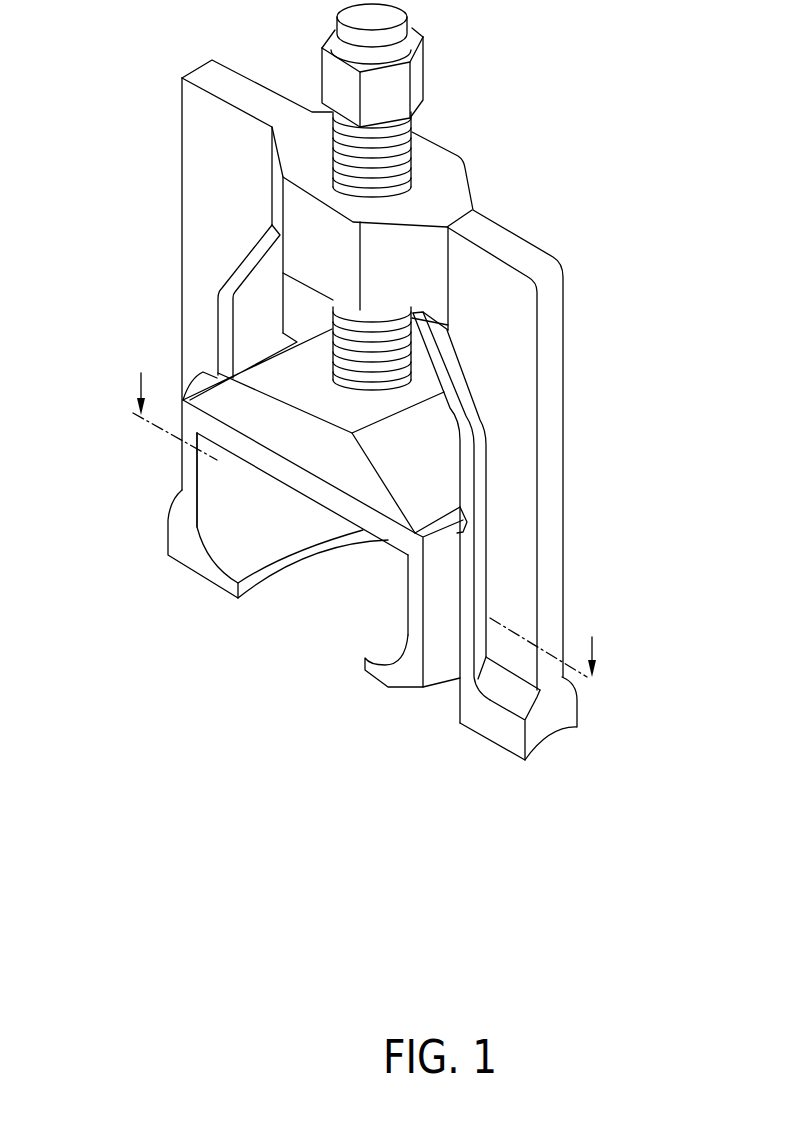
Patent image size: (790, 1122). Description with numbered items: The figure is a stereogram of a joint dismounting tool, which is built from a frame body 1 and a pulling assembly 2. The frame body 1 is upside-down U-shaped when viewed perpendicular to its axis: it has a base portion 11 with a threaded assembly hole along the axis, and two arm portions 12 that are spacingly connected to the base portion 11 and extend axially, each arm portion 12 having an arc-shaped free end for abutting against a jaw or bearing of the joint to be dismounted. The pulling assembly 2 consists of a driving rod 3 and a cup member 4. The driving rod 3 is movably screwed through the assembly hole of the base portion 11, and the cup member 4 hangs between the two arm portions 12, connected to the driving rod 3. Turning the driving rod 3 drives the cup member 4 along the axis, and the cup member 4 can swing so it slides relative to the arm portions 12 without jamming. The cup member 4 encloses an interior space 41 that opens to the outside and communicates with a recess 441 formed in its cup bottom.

The frame body 1 is at (76, 0).
The base portion 11 is at (312, 140).
The arm portions 12 is at (203, 130).
The pulling assembly 2 is at (577, 63).
The driving rod 3 is at (412, 133).
The cup member 4 is at (425, 433).
The interior space 41 is at (236, 527).
The recess 441 is at (312, 628).